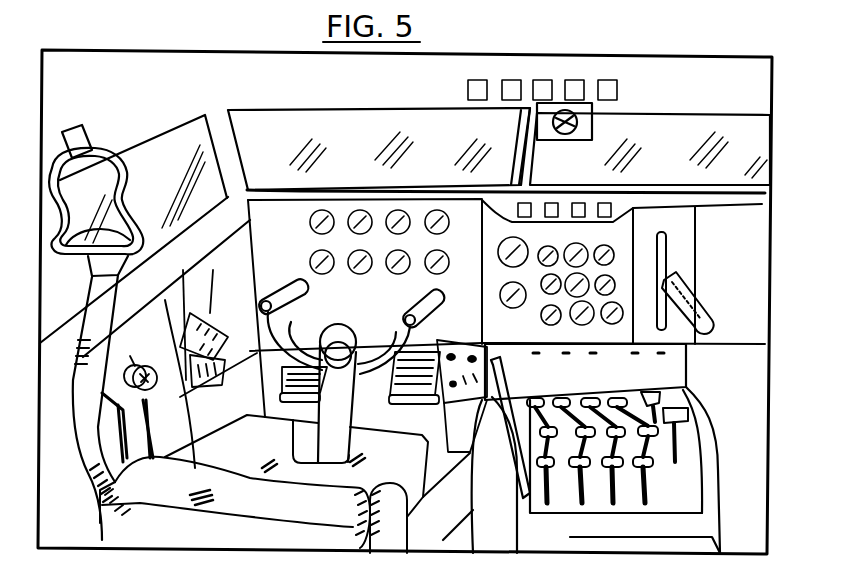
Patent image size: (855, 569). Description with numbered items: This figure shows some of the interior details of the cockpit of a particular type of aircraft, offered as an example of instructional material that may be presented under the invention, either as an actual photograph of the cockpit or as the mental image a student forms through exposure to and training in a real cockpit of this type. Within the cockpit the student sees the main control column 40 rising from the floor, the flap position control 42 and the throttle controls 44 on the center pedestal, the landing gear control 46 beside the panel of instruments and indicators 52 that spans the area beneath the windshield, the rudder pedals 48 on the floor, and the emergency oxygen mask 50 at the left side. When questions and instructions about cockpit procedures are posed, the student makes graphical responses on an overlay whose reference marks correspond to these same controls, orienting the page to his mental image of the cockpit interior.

The main control column 40 is at (342, 402).
The flap position control 42 is at (680, 410).
The throttle controls 44 is at (600, 398).
The landing gear control 46 is at (702, 312).
The rudder pedals 48 is at (385, 350).
The emergency oxygen mask 50 is at (150, 168).
The panel of instruments and indicators 52 is at (348, 231).